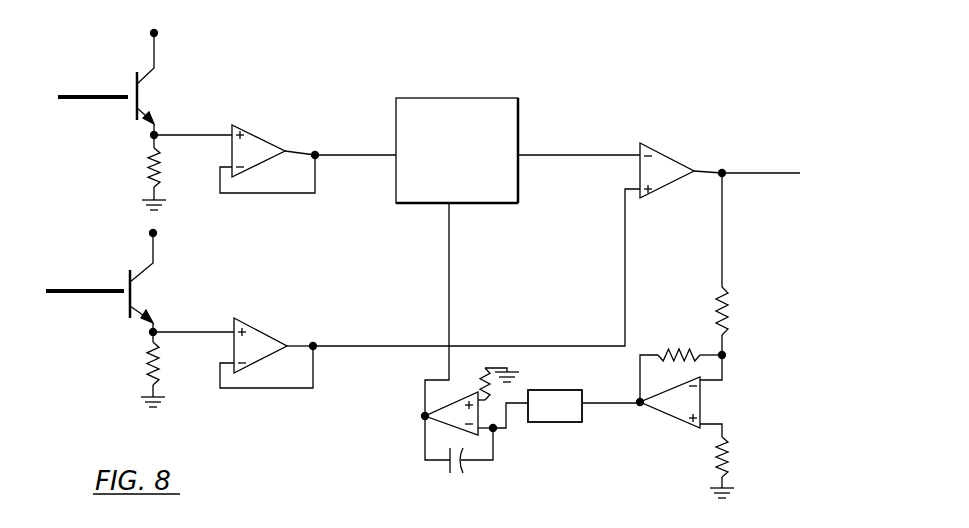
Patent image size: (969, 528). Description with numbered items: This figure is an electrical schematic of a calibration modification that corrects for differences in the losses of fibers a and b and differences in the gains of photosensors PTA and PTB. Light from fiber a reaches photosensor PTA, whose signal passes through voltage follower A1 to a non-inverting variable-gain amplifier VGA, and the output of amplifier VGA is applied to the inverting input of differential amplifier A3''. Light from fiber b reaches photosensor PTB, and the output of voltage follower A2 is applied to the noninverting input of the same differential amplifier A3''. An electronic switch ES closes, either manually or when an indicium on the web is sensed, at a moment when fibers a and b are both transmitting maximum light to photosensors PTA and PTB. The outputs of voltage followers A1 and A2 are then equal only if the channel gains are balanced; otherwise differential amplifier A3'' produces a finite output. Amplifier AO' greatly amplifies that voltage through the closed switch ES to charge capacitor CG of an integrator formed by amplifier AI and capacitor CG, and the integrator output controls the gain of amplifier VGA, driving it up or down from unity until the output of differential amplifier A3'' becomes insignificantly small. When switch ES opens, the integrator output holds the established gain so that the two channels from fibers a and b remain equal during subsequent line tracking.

The fiber a is at (90, 95).
The fiber b is at (84, 289).
The photosensor PTA is at (156, 84).
The photosensor PTB is at (153, 283).
The voltage follower A1 is at (262, 144).
The voltage follower A2 is at (261, 331).
The variable-gain amplifier VGA is at (497, 101).
The differential amplifier A3'' is at (720, 157).
The amplifier AO' is at (685, 423).
The electronic switch ES is at (555, 406).
The integrator amplifier AI is at (458, 407).
The capacitor CG is at (445, 465).